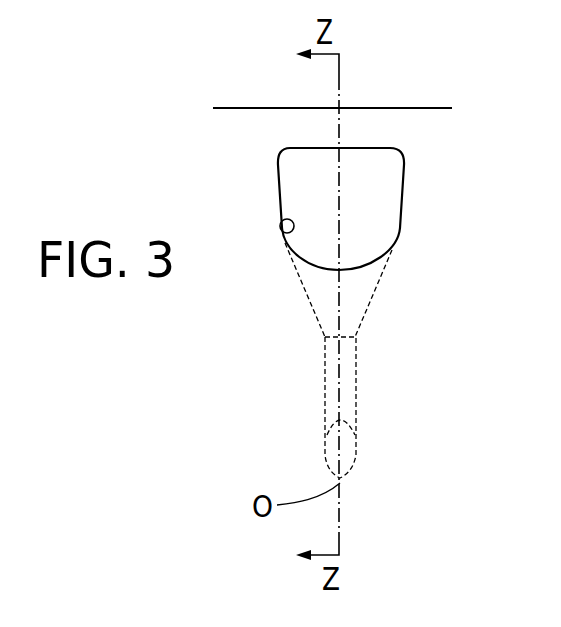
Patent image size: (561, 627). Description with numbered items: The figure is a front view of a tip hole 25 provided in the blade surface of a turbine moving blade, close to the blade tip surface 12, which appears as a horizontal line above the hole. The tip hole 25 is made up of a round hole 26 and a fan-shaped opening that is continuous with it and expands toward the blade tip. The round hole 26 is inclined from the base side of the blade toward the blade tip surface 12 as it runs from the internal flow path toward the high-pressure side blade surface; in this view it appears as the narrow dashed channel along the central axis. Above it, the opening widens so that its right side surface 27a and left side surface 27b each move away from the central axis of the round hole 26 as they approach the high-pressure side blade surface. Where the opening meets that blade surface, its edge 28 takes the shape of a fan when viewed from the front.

The blade tip surface 12 is at (427, 108).
The tip hole 25 is at (281, 138).
The round hole 26 is at (350, 405).
The right side surface 27a is at (367, 286).
The left side surface 27b is at (322, 320).
The edge of the opening 28 is at (283, 233).